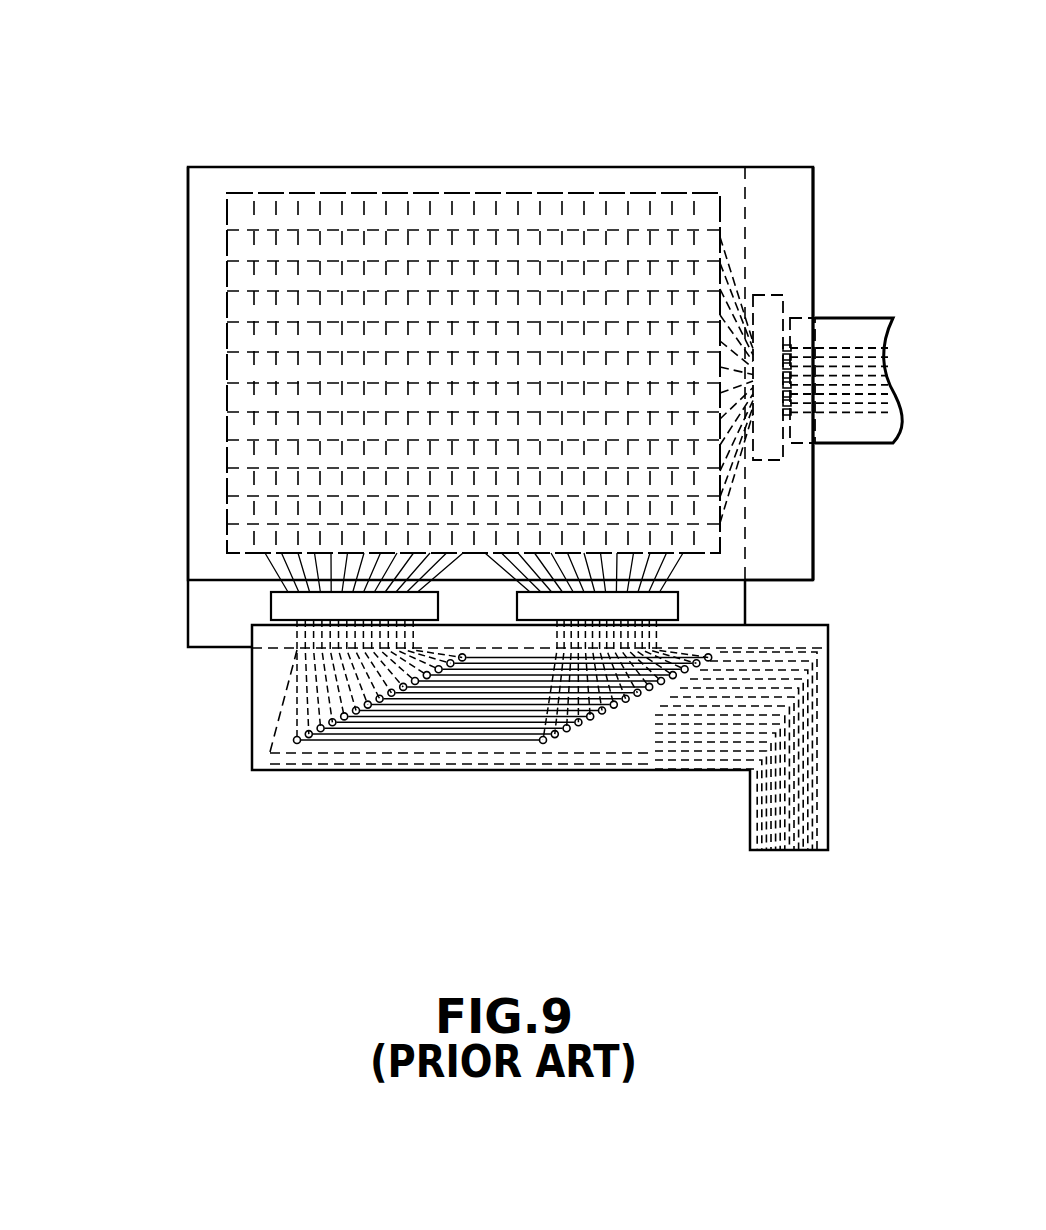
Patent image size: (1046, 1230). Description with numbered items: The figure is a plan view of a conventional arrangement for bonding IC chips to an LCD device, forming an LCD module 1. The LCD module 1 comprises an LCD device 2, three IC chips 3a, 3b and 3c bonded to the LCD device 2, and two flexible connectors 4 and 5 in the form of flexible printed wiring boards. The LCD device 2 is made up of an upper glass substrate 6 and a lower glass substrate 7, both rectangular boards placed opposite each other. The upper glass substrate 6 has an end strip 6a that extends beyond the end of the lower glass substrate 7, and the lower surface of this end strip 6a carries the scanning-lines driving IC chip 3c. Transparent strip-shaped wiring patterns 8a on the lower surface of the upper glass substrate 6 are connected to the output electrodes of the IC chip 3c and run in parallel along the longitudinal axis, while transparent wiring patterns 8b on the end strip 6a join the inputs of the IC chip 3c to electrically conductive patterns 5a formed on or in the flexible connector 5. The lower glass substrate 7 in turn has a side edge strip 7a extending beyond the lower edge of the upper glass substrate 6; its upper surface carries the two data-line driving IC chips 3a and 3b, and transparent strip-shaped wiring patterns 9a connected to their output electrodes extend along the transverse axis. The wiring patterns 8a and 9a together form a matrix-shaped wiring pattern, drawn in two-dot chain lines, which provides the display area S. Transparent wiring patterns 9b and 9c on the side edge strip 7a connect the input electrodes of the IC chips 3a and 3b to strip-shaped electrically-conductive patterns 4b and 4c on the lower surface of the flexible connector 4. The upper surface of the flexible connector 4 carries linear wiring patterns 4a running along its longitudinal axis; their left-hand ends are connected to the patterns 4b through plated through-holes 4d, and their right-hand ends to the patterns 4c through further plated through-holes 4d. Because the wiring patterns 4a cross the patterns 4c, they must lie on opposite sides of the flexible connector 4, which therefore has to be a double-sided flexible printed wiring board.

The LCD module 1 is at (668, 123).
The LCD device 2 is at (185, 252).
The upper glass substrate 6 is at (197, 307).
The end strip 6a is at (800, 200).
The display area S is at (392, 212).
The wiring patterns 8a is at (725, 250).
The scanning-lines driving IC chip 3c is at (767, 305).
The flexible connector 5 is at (863, 330).
The electrically conductive patterns 5a is at (870, 413).
The wiring patterns 8b is at (786, 412).
The wiring patterns 9a is at (263, 567).
The IC chip 3a is at (272, 606).
The IC chip 3b is at (678, 606).
The lower glass substrate 7 is at (748, 590).
The side edge strip 7a is at (193, 630).
The wiring patterns 9b is at (293, 625).
The wiring patterns 9c is at (660, 623).
The flexible connector 4 is at (828, 822).
The wiring patterns 4a is at (443, 742).
The electrically-conductive patterns 4b is at (277, 723).
The electrically-conductive patterns 4c is at (688, 650).
The plated through-holes 4d is at (610, 812).